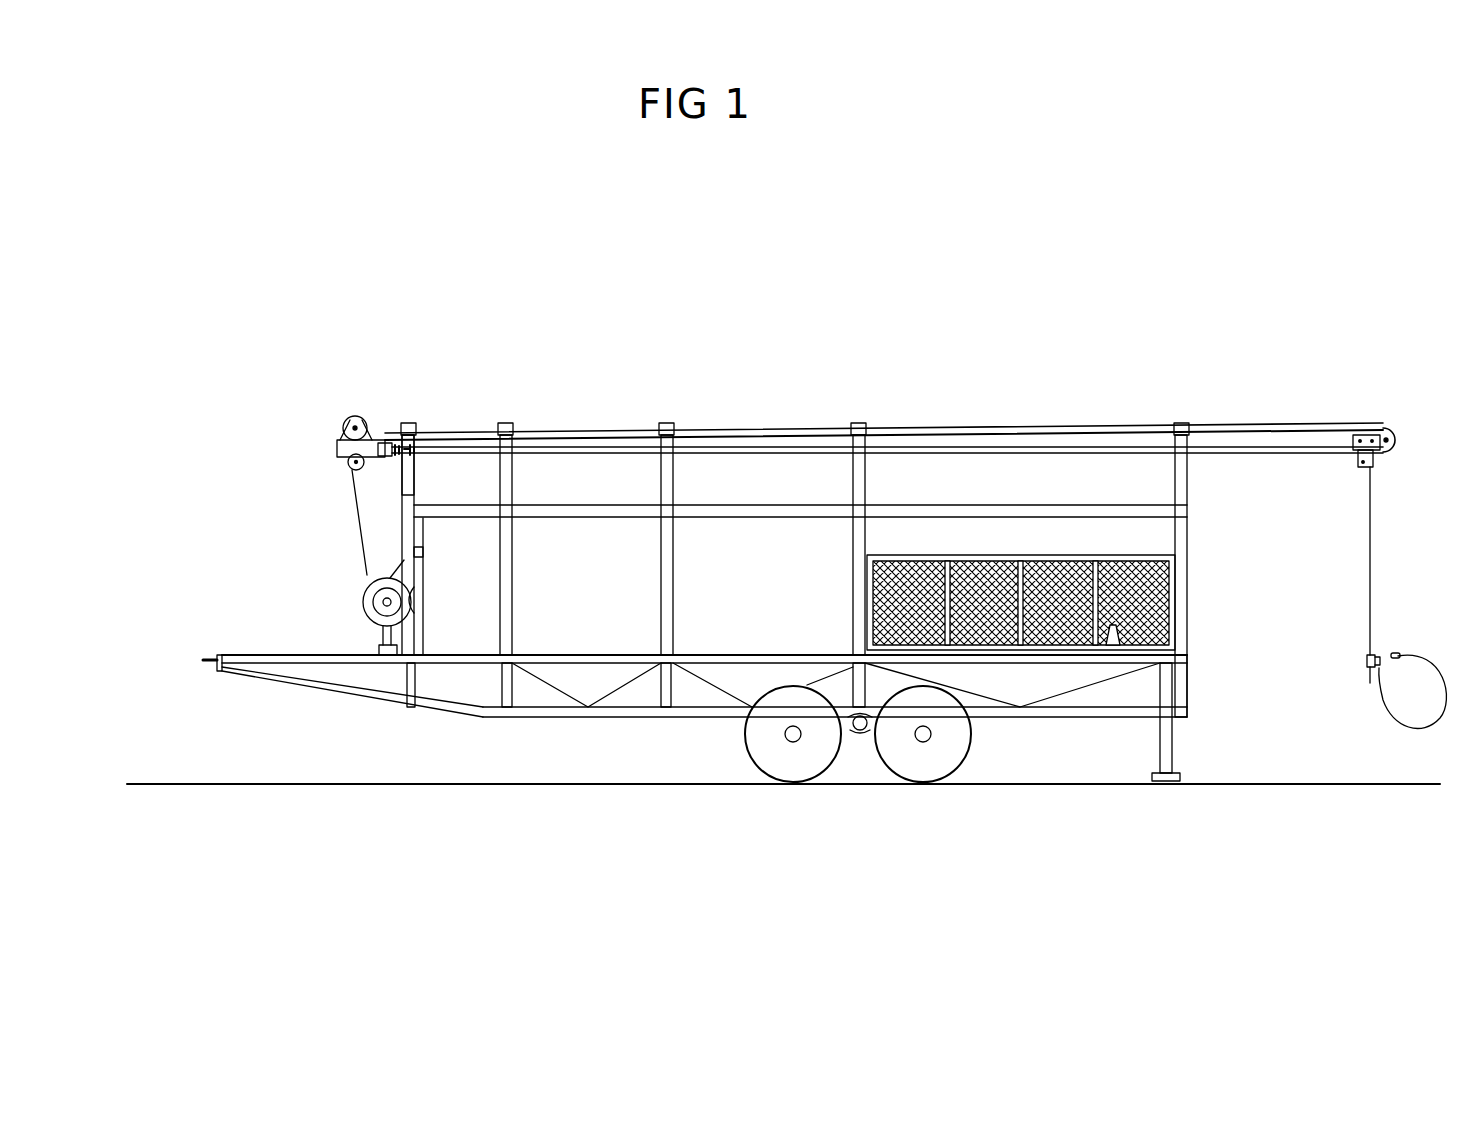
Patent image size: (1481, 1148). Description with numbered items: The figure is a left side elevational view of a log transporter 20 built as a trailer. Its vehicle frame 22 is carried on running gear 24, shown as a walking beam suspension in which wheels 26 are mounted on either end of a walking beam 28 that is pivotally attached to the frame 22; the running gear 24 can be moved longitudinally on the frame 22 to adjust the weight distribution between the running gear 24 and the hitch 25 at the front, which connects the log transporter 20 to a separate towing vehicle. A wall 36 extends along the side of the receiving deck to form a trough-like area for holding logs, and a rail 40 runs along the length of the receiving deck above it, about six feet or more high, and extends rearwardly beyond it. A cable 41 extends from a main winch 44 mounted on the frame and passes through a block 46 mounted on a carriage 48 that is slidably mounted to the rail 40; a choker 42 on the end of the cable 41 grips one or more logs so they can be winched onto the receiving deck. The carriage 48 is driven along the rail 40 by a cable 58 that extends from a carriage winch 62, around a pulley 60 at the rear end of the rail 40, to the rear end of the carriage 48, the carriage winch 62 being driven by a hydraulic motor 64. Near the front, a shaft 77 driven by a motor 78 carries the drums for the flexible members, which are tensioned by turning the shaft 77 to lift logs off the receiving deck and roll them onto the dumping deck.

The log transporter 20 is at (785, 355).
The vehicle frame 22 is at (378, 713).
The running gear 24 is at (760, 800).
The hitch 25 is at (201, 655).
The wheels 26 is at (757, 740).
The walking beam 28 is at (860, 740).
The wall 36 is at (430, 510).
The rail 40 is at (758, 440).
The cable 41 is at (1370, 603).
The choker 42 is at (1386, 702).
The main winch 44 is at (365, 585).
The block 46 is at (1357, 465).
The carriage 48 is at (1374, 462).
The cable 58 is at (1378, 447).
The pulley 60 is at (1395, 435).
The carriage winch 62 is at (343, 421).
The hydraulic motor 64 is at (357, 418).
The shaft 77 is at (562, 450).
The motor 78 is at (389, 440).